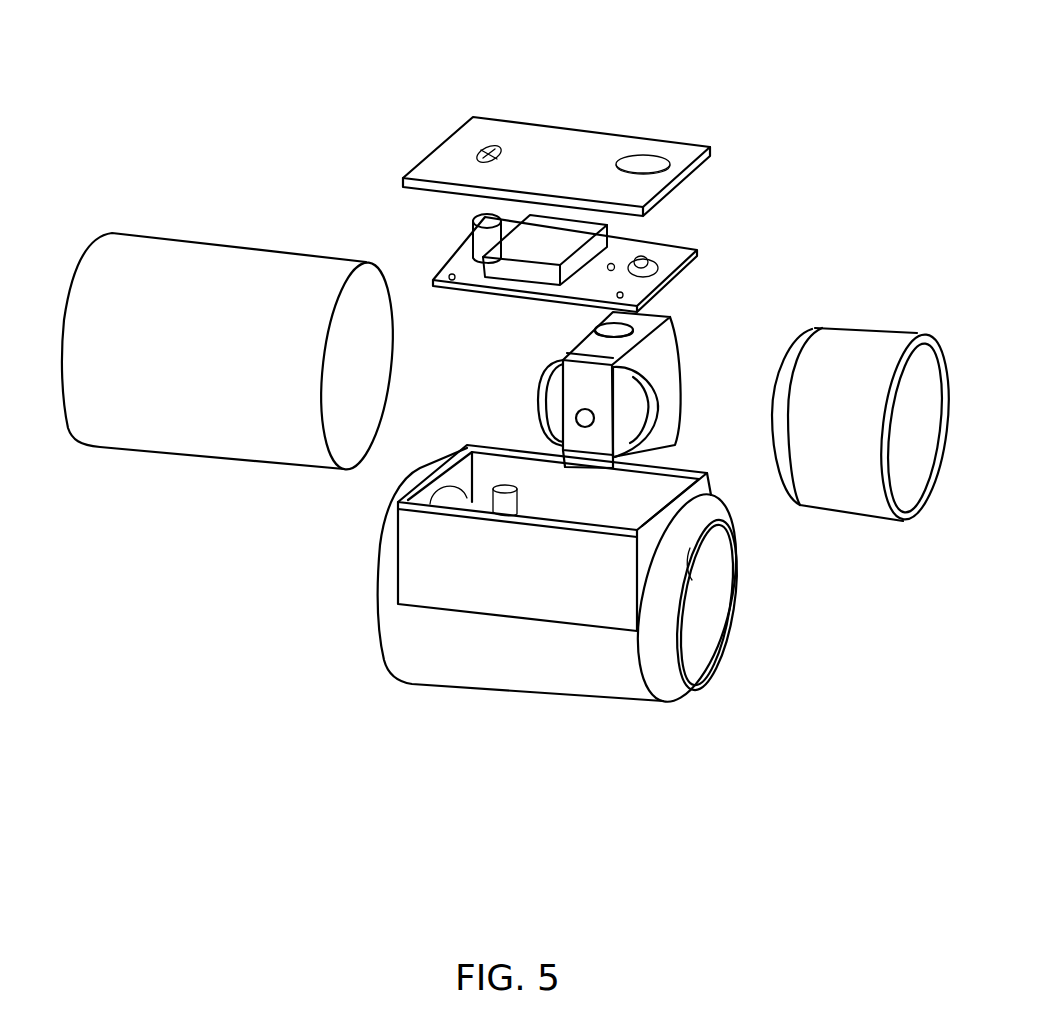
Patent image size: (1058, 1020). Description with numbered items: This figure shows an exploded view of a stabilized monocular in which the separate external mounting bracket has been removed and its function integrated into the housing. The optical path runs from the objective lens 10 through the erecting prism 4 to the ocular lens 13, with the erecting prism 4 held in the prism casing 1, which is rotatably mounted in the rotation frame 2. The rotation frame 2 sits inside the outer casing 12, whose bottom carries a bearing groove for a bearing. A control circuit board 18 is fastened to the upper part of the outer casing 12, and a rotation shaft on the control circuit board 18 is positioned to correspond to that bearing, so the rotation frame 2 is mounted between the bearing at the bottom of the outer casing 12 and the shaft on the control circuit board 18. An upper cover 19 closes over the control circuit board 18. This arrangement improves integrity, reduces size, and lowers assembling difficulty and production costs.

The objective lens 10 is at (119, 260).
The upper cover 19 is at (569, 135).
The rotation frame 2 is at (643, 285).
The control circuit board 18 is at (453, 248).
The prism casing 1 is at (674, 309).
The erecting prism 4 is at (673, 440).
The outer casing 12 is at (611, 634).
The ocular lens 13 is at (863, 356).